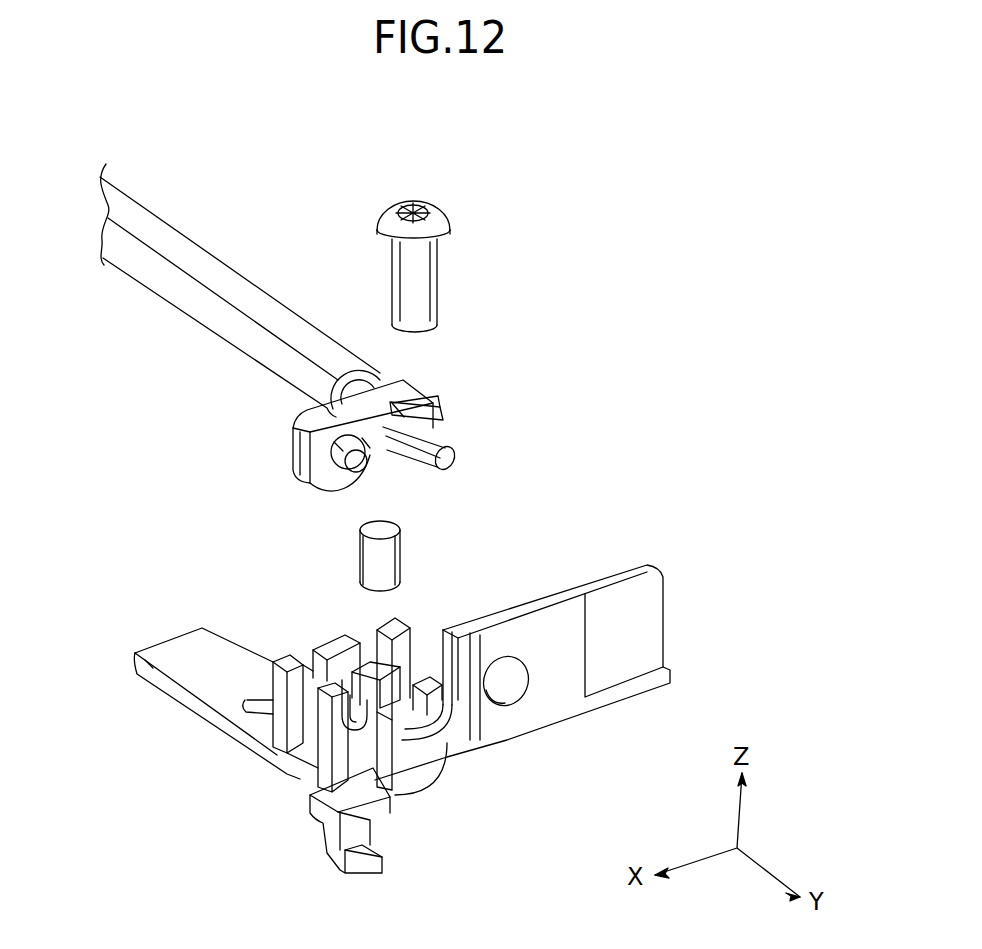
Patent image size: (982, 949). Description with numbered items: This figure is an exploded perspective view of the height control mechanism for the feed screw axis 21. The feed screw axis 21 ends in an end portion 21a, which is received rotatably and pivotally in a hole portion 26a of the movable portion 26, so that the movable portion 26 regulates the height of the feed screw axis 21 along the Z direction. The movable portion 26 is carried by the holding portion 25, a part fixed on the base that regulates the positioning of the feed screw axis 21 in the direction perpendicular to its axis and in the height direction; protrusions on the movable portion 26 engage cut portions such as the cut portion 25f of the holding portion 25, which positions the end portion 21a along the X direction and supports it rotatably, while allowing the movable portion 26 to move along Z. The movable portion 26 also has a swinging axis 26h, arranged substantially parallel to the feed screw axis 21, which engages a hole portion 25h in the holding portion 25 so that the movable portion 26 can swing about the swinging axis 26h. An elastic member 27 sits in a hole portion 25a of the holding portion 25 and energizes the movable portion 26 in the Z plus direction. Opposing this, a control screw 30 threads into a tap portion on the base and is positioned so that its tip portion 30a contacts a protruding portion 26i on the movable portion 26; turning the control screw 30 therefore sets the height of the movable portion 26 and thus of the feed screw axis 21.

The feed screw axis 21 is at (187, 251).
The end portion of the feed screw axis 21a is at (455, 455).
The holding portion 25 is at (367, 724).
The hole portion of the holding portion 25a is at (383, 730).
The cut portion of the holding portion 25f is at (370, 655).
The hole portion of the holding portion 25h is at (310, 658).
The movable portion 26 is at (379, 475).
The hole portion of the movable portion 26a is at (386, 450).
The swinging axis 26h is at (333, 457).
The protruding portion of the movable portion 26i is at (432, 405).
The elastic member 27 is at (398, 560).
The control screw 30 is at (454, 259).
The tip portion of the control screw 30a is at (424, 336).